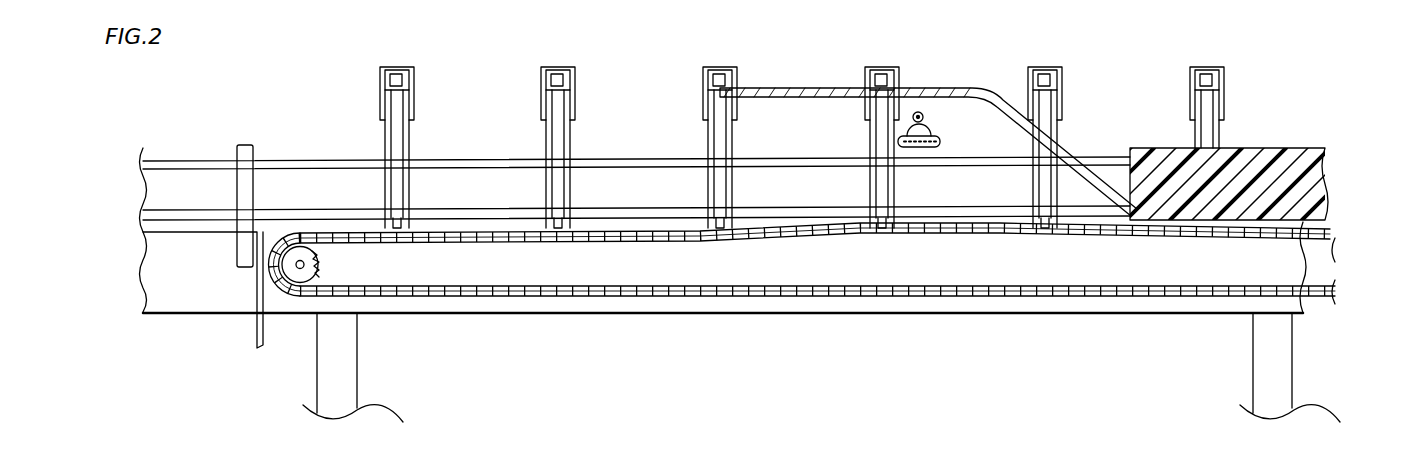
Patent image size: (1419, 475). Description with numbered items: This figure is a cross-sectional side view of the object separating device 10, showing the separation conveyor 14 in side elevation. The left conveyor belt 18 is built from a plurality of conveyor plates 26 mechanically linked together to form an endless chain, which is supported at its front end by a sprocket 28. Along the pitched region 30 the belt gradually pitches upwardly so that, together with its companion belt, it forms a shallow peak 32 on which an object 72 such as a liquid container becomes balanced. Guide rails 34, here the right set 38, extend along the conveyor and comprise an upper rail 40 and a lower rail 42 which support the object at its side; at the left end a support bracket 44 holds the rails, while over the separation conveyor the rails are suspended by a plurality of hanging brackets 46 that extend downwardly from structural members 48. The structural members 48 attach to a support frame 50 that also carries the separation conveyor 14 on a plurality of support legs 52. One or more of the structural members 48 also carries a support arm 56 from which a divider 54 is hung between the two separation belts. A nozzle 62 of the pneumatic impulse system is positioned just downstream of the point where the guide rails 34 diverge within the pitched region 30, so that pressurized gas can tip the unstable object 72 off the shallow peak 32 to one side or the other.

The object separating device 10 is at (1318, 84).
The separation conveyor 14 is at (500, 333).
The left conveyor belt 18 is at (828, 298).
The conveyor plates 26 is at (1010, 298).
The sprocket 28 is at (320, 263).
The pitched region 30 is at (1240, 353).
The shallow peak 32 is at (948, 211).
The guide rails 34 is at (305, 160).
The right set of guide rails 38 is at (137, 133).
The upper rail 40 is at (185, 160).
The lower rail 42 is at (170, 212).
The support bracket 44 is at (247, 145).
The hanging brackets 46 is at (405, 142).
The structural members 48 is at (397, 66).
The support frame 50 is at (1327, 324).
The support legs 52 is at (357, 375).
The divider 54 is at (1285, 150).
The support arm 56 is at (800, 90).
The nozzle 62 is at (933, 135).
The object 72 is at (920, 112).